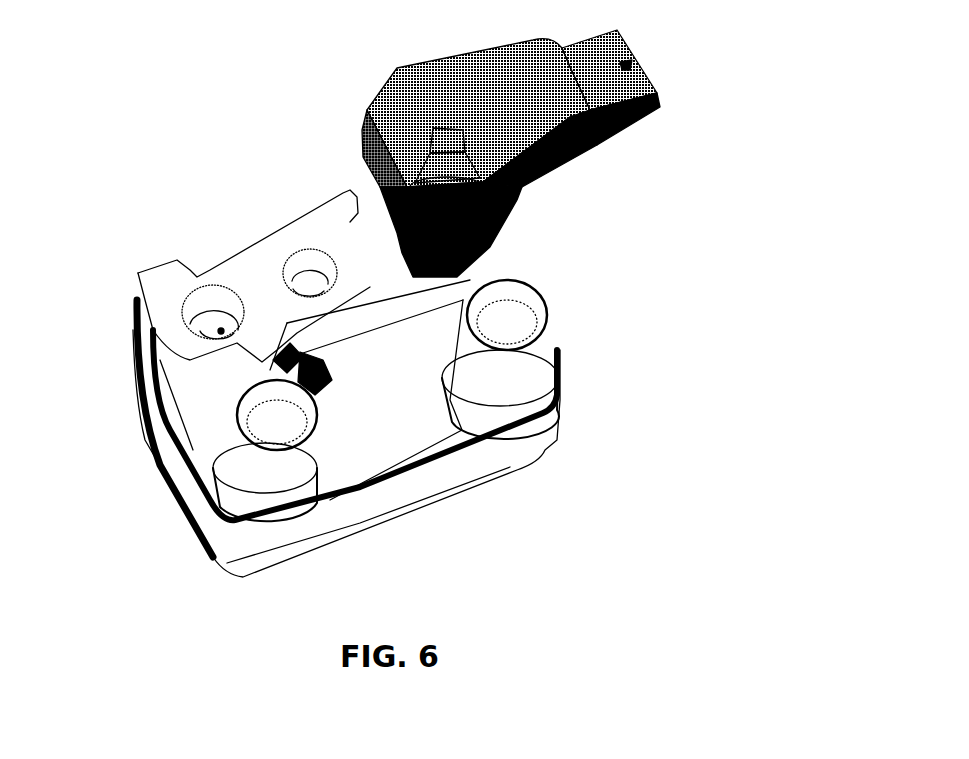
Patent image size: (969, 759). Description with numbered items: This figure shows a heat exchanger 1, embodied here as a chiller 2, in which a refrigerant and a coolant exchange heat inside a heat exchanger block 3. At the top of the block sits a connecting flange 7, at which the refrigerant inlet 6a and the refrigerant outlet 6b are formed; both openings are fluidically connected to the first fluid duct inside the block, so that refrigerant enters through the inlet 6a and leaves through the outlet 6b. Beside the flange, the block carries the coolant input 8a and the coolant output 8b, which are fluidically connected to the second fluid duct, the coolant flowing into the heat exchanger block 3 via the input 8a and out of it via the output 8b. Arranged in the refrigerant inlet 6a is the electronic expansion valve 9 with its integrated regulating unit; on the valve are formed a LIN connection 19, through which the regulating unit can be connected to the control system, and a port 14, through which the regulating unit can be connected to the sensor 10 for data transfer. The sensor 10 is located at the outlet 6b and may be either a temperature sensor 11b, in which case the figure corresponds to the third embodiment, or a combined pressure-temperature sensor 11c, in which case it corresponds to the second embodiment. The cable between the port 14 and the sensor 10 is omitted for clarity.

The heat exchanger 1 is at (379, 296).
The chiller 2 is at (379, 296).
The heat exchanger block 3 is at (498, 453).
The inlet 6a is at (307, 267).
The outlet 6b is at (213, 297).
The connecting flange 7 is at (204, 274).
The input 8a is at (287, 421).
The output 8b is at (513, 313).
The electronic expansion valve 9 is at (535, 146).
The sensor 10 is at (364, 388).
The temperature sensor 11b is at (288, 358).
The pressure-temperature sensor 11c is at (330, 380).
The port 14 is at (522, 187).
The LIN connection 19 is at (638, 47).